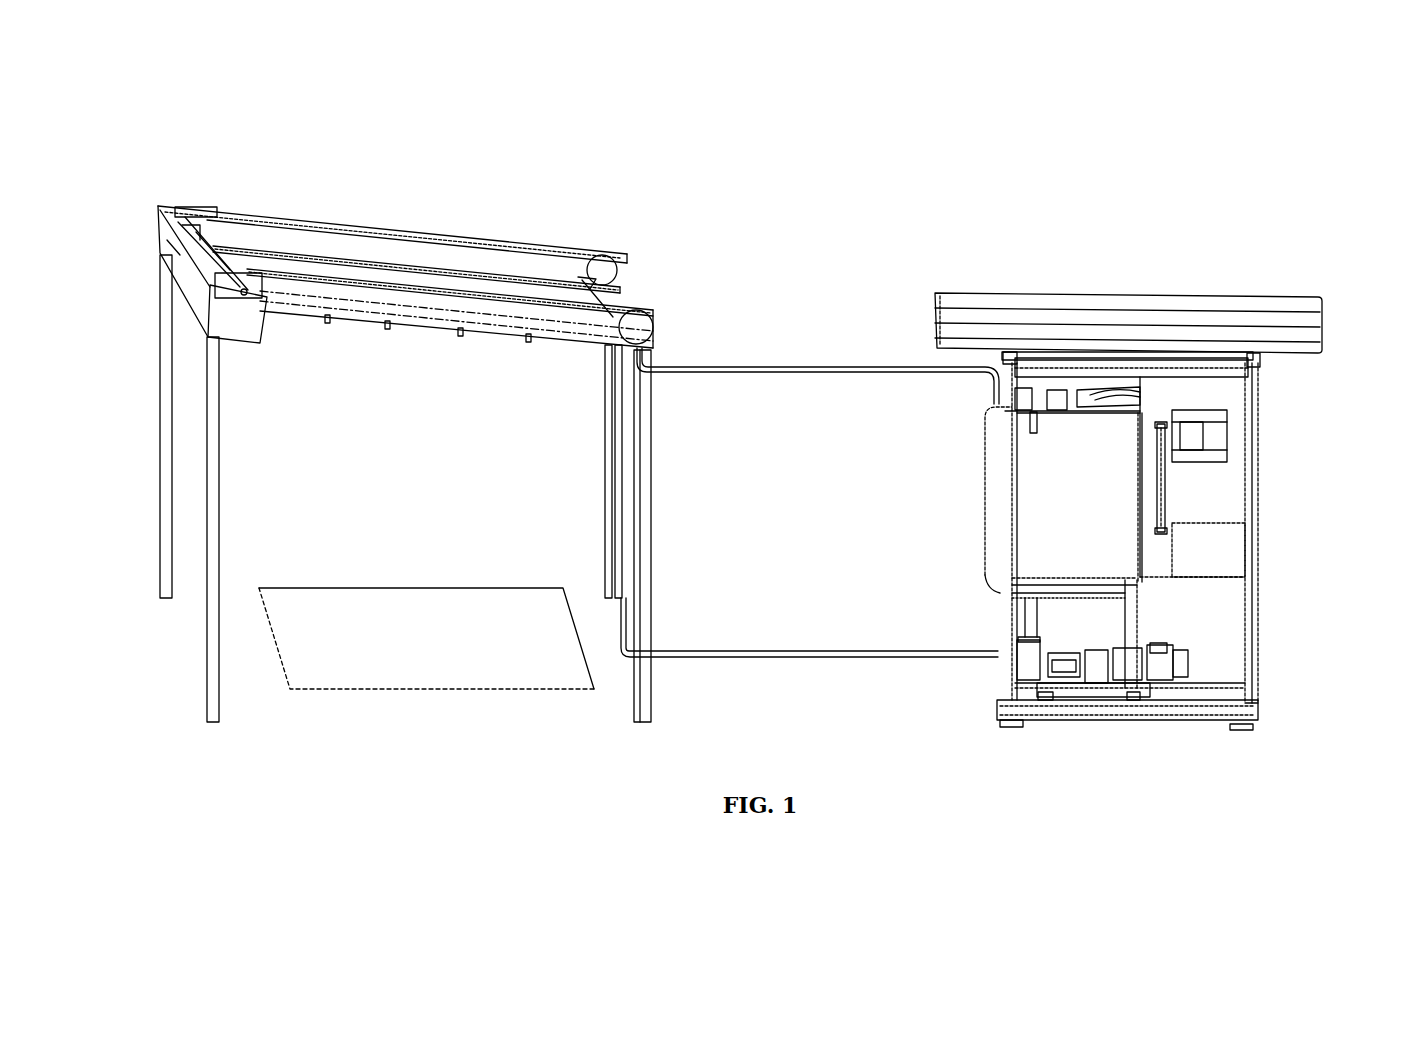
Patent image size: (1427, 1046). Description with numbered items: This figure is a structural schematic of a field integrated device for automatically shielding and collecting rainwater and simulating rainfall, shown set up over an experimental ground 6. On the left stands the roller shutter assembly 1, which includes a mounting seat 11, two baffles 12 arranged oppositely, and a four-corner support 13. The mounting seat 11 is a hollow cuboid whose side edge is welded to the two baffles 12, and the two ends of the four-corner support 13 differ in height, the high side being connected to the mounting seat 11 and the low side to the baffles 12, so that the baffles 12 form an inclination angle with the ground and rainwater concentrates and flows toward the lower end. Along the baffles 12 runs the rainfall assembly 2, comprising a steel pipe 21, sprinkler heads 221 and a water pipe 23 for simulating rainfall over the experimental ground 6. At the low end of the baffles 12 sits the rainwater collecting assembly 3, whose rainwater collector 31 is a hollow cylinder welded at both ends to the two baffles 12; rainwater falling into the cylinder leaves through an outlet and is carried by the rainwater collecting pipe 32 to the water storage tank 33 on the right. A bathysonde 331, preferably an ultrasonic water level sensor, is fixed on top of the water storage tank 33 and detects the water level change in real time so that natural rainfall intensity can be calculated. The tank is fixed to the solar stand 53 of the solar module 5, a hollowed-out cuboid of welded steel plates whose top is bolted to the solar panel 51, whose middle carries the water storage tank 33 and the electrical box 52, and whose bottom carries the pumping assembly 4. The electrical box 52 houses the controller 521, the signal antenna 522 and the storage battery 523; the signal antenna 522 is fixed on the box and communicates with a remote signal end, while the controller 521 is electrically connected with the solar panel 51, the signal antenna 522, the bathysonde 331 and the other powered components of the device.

The roller shutter assembly 1 is at (165, 185).
The mounting seat 11 is at (157, 203).
The baffle 12 is at (333, 220).
The four-corner support 13 is at (158, 478).
The rainfall assembly 2 is at (437, 300).
The steel pipe 21 is at (483, 317).
The sprinkler head 221 is at (530, 337).
The water pipe 23 is at (617, 647).
The rainwater collecting assembly 3 is at (600, 247).
The rainwater collector 31 is at (633, 283).
The rainwater collecting pipe 32 is at (762, 367).
The water storage tank 33 is at (993, 457).
The bathysonde 331 is at (1022, 427).
The pumping assembly 4 is at (1023, 655).
The solar module 5 is at (1230, 273).
The solar panel 51 is at (1192, 298).
The electrical box 52 is at (1247, 390).
The controller 521 is at (1218, 438).
The signal antenna 522 is at (1162, 498).
The storage battery 523 is at (1222, 537).
The solar stand 53 is at (1255, 635).
The experimental ground 6 is at (342, 652).